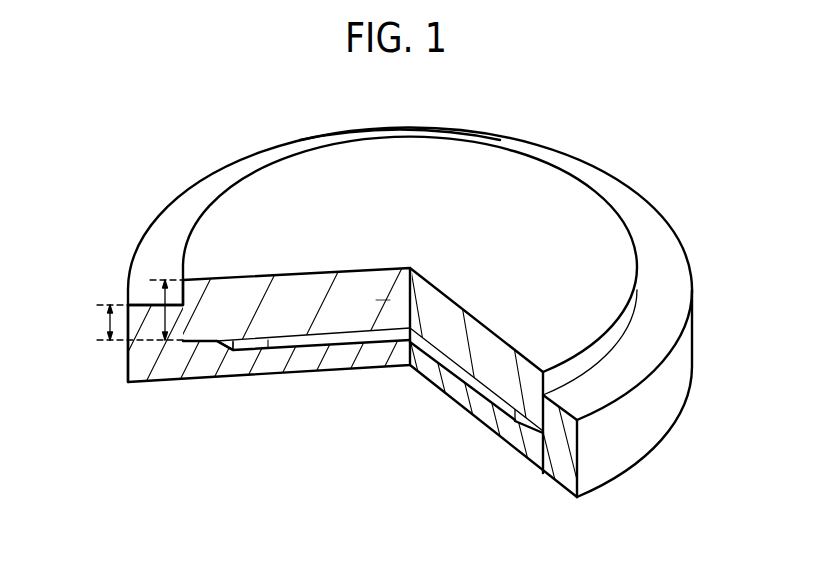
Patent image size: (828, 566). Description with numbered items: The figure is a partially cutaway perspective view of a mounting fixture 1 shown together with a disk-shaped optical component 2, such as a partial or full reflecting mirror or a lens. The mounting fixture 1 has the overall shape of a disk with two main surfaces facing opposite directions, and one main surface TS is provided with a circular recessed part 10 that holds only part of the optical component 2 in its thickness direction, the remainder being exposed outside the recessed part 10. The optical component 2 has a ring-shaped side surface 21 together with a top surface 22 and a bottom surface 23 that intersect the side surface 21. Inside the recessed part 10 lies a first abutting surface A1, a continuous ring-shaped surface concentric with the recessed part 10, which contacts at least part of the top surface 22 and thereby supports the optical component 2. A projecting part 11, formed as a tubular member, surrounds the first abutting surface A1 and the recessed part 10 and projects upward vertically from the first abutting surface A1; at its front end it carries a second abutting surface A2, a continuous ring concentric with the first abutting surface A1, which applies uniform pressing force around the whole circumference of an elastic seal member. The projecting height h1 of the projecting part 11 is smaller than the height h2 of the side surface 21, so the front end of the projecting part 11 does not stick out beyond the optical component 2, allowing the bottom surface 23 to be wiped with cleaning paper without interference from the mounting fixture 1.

The mounting fixture 1 is at (163, 191).
The optical component 2 is at (496, 165).
The recessed part 10 is at (383, 303).
The projecting part 11 is at (552, 437).
The side surface 21 is at (556, 384).
The top surface 22 is at (274, 334).
The bottom surface 23 is at (250, 278).
The first abutting surface A1 is at (218, 336).
The second abutting surface A2 is at (160, 300).
The projecting height h1 is at (108, 323).
The height of side surface h2 is at (181, 318).
The main surface TS is at (635, 227).